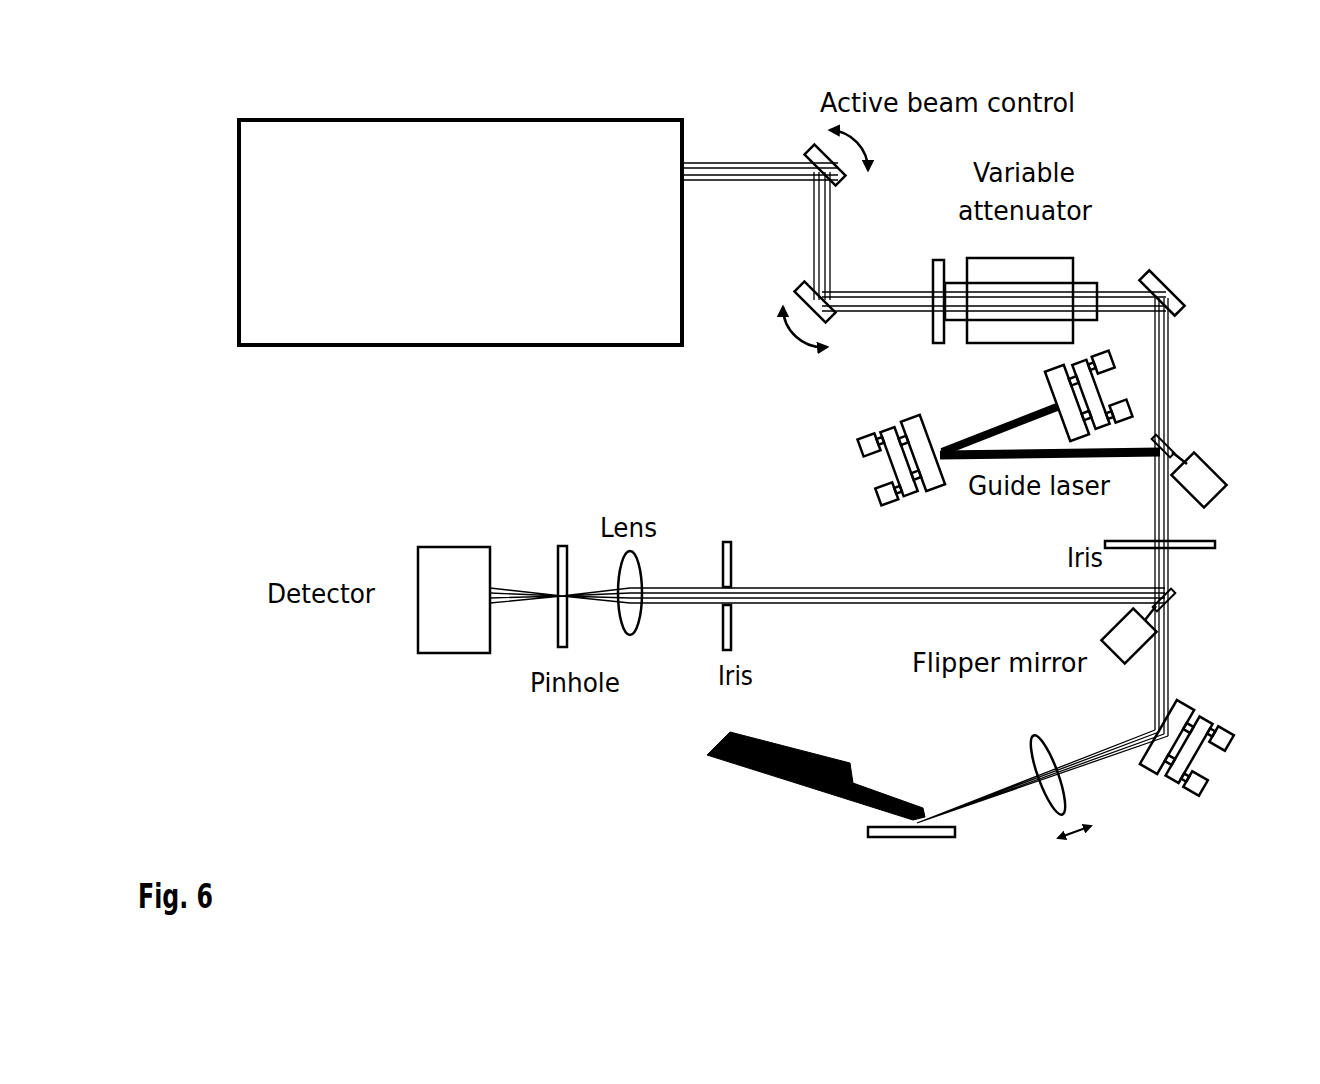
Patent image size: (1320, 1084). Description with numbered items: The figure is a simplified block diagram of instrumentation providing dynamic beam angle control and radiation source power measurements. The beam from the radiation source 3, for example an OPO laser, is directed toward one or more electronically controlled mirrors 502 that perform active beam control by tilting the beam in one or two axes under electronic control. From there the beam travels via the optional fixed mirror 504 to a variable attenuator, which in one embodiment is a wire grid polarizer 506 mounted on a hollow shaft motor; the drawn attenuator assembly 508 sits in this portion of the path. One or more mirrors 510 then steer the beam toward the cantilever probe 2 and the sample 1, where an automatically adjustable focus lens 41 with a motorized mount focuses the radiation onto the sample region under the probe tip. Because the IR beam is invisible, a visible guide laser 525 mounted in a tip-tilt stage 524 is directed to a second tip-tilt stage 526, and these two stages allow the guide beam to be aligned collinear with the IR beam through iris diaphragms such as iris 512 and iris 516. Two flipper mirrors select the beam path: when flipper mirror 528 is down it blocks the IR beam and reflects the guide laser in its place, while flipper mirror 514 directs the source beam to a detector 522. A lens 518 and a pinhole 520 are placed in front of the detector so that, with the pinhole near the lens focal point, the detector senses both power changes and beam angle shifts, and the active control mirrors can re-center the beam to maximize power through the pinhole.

The sample 1 is at (911, 848).
The cantilever probe 2 is at (816, 776).
The radiation source 3 is at (460, 232).
The focus lens 41 is at (1035, 785).
The electronically controlled mirror 502 is at (843, 173).
The fixed mirror 504 is at (832, 323).
The wire grid polarizer 506 is at (909, 299).
The variable attenuator 508 is at (1021, 285).
The mirror 510 is at (1181, 293).
The iris diaphragm 512 is at (1188, 555).
The flipper mirror 514 is at (1167, 693).
The iris 516 is at (726, 581).
The lens 518 is at (636, 610).
The pinhole 520 is at (561, 579).
The detector 522 is at (454, 582).
The tip-tilt stage 524 is at (1060, 395).
The guide laser 525 is at (1005, 429).
The second tip-tilt stage 526 is at (982, 461).
The flipper mirror 528 is at (1212, 471).